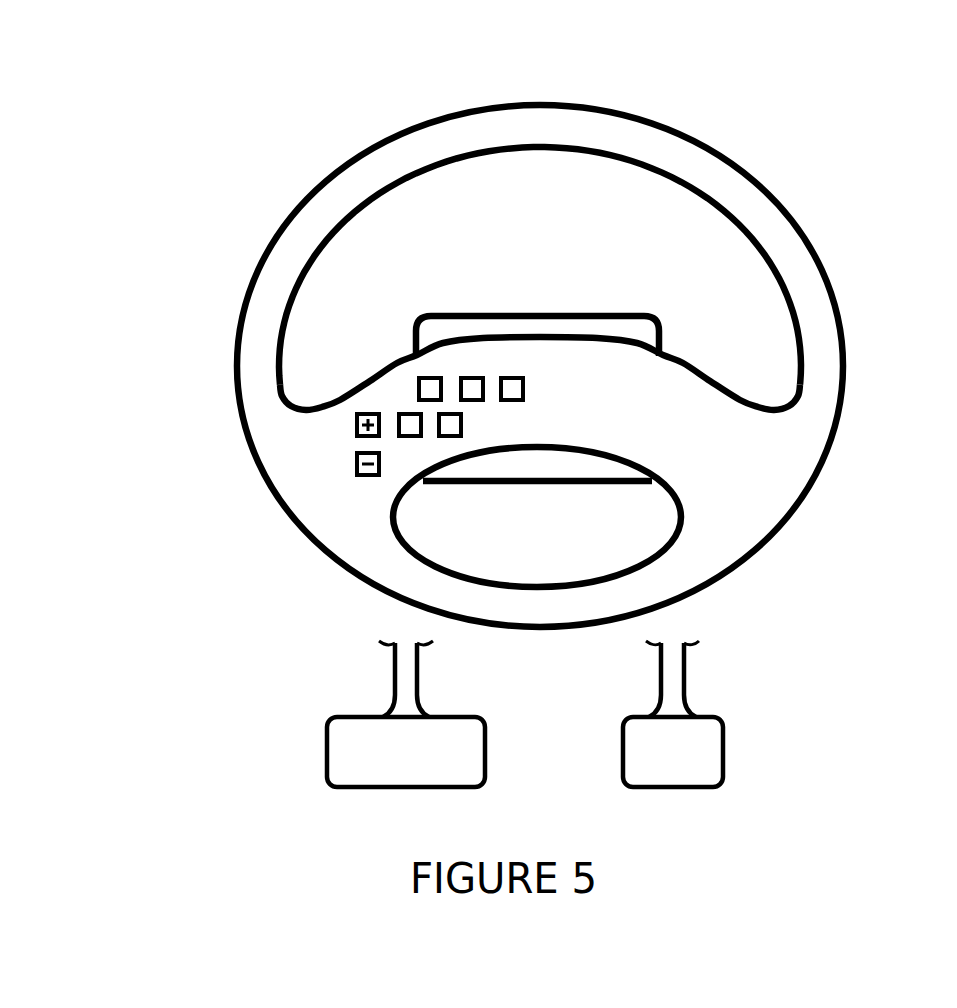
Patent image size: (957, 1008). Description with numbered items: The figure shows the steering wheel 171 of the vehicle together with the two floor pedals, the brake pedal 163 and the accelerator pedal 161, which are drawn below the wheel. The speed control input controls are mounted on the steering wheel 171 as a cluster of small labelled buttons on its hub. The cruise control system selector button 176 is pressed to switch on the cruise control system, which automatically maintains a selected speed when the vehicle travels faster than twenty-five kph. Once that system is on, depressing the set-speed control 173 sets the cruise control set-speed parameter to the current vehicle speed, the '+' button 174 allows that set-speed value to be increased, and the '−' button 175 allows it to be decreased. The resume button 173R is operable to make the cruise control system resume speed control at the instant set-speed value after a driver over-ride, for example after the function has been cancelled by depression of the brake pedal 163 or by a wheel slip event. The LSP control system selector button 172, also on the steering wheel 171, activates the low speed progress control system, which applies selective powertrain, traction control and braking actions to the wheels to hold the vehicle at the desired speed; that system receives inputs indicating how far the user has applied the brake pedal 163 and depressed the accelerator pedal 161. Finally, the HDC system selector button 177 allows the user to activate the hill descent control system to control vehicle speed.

The steering wheel 171 is at (812, 313).
The LSP control system selector button 172 is at (433, 377).
The set-speed control 173 is at (398, 414).
The resume button 173R is at (450, 438).
The '+' button 174 is at (356, 417).
The '−' button 175 is at (356, 467).
The cruise control system selector button 176 is at (477, 377).
The HDC system selector button 177 is at (512, 377).
The brake pedal 163 is at (343, 745).
The accelerator pedal 161 is at (700, 745).